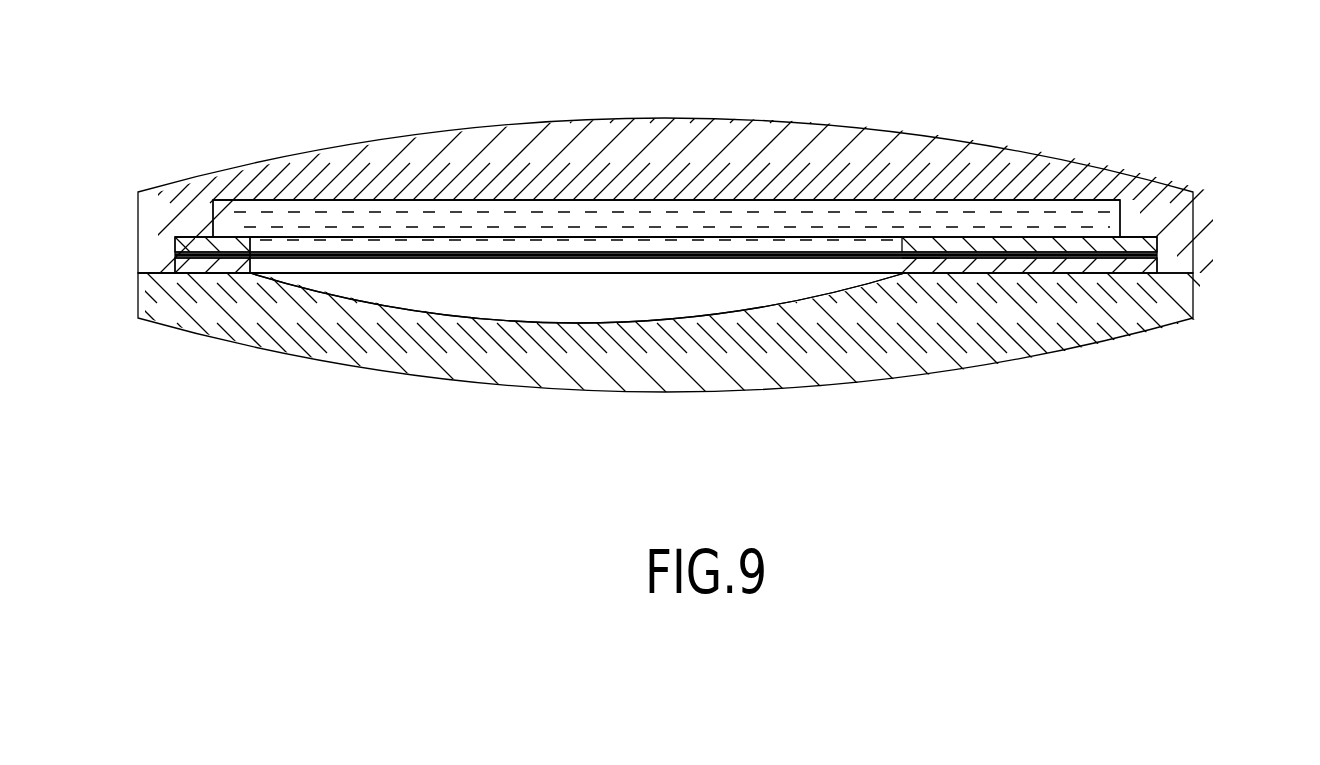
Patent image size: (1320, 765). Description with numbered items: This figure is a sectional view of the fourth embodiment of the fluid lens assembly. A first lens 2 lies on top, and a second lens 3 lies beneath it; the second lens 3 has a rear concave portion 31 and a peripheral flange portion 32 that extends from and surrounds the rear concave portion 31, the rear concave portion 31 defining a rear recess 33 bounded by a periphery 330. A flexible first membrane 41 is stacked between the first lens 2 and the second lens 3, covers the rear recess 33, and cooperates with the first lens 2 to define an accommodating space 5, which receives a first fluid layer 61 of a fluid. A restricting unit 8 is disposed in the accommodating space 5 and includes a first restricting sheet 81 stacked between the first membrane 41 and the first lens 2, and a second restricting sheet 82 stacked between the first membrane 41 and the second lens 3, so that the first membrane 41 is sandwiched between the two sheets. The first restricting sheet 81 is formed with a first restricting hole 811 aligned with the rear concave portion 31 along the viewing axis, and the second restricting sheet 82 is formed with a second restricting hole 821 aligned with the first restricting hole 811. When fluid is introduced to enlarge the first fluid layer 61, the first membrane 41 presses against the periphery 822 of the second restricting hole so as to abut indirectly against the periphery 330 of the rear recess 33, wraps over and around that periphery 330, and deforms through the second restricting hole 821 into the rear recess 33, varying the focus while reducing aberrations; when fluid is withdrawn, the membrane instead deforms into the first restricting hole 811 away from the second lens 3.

The first lens 2 is at (173, 178).
The second lens 3 is at (147, 326).
The accommodating space 5 is at (850, 208).
The restricting unit 8 is at (1266, 207).
The rear concave portion 31 is at (386, 352).
The peripheral flange portion 32 is at (205, 288).
The rear recess 33 is at (665, 298).
The first membrane 41 is at (274, 259).
The first fluid layer 61 is at (1002, 204).
The first restricting sheet 81 is at (1155, 242).
The second restricting sheet 82 is at (1155, 262).
The periphery of the rear recess 330 is at (248, 286).
The first restricting hole 811 is at (742, 238).
The second restricting hole 821 is at (560, 270).
The periphery of the second restricting hole 822 is at (902, 260).